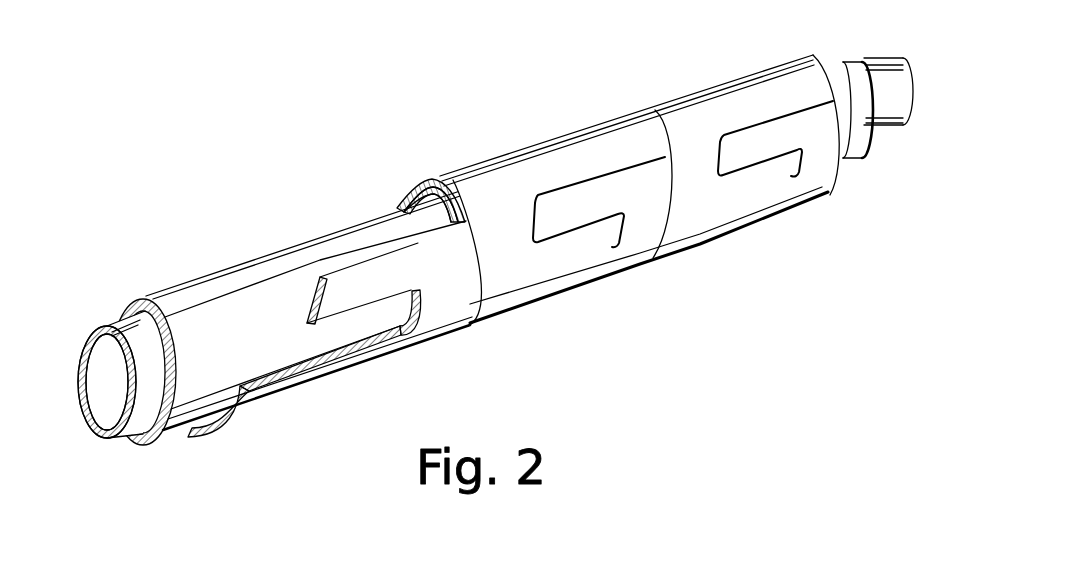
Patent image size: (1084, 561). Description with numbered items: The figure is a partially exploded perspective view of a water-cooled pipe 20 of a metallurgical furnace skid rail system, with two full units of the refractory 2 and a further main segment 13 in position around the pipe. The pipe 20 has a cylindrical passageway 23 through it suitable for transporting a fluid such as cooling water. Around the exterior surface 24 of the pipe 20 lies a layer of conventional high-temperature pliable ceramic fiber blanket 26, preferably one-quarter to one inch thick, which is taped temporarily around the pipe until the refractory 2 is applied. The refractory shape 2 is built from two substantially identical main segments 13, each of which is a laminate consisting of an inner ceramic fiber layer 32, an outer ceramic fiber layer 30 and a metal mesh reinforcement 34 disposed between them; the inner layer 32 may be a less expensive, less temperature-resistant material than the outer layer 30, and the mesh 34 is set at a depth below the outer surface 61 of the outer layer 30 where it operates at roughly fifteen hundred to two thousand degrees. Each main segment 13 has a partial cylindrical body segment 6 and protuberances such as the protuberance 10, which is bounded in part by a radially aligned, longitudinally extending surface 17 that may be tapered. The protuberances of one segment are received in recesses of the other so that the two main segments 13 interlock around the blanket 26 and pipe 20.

The refractory 2 is at (598, 282).
The partial cylindrical body segment 6 is at (268, 400).
The protuberance 10 is at (362, 296).
The main segment 13 is at (323, 393).
The radially aligned and longitudinally extending surface 17 is at (399, 300).
The water-cooled pipe 20 is at (100, 440).
The cylindrical passageway 23 is at (100, 402).
The exterior surface 24 is at (108, 332).
The ceramic fiber blanket 26 is at (143, 300).
The outer ceramic fiber layer 30 is at (438, 179).
The inner ceramic fiber layer 32 is at (412, 200).
The metal mesh reinforcement 34 is at (426, 187).
The outer surface 61 is at (573, 131).